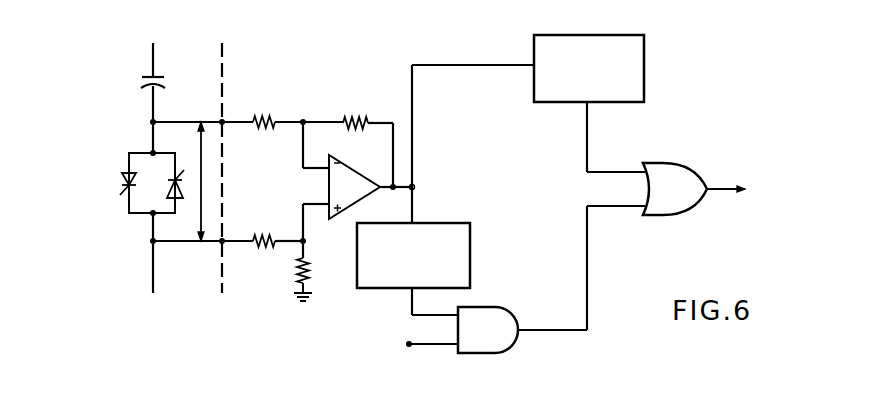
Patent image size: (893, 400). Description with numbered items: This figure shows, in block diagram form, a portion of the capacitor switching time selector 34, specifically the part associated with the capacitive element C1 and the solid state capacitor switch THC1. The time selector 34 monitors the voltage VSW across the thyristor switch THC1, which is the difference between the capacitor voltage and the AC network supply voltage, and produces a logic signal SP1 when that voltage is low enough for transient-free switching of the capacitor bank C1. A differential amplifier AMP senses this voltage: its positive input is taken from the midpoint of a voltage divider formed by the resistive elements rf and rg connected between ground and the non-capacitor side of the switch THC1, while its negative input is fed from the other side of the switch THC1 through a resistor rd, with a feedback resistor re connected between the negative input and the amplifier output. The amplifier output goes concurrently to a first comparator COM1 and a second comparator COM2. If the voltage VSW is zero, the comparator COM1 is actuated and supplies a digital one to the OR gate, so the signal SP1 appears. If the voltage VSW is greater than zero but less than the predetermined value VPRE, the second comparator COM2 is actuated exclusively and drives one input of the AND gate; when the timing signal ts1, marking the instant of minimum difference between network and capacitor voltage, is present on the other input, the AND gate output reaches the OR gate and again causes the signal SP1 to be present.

The capacitive element C1 is at (141, 80).
The solid state capacitor switch THC1 is at (112, 194).
The switch voltage VSW is at (202, 181).
The resistor rd is at (258, 100).
The feedback resistor re is at (348, 118).
The resistive element rf is at (262, 223).
The resistive element rg is at (295, 270).
The capacitor switching time selector 34 is at (312, 339).
The differential amplifier AMP is at (354, 187).
The first comparator COM1 is at (582, 34).
The second comparator COM2 is at (444, 222).
The OR gate OR is at (675, 189).
The AND gate AND is at (488, 330).
The logic signal SP1 is at (765, 191).
The timing signal ts1 is at (390, 344).